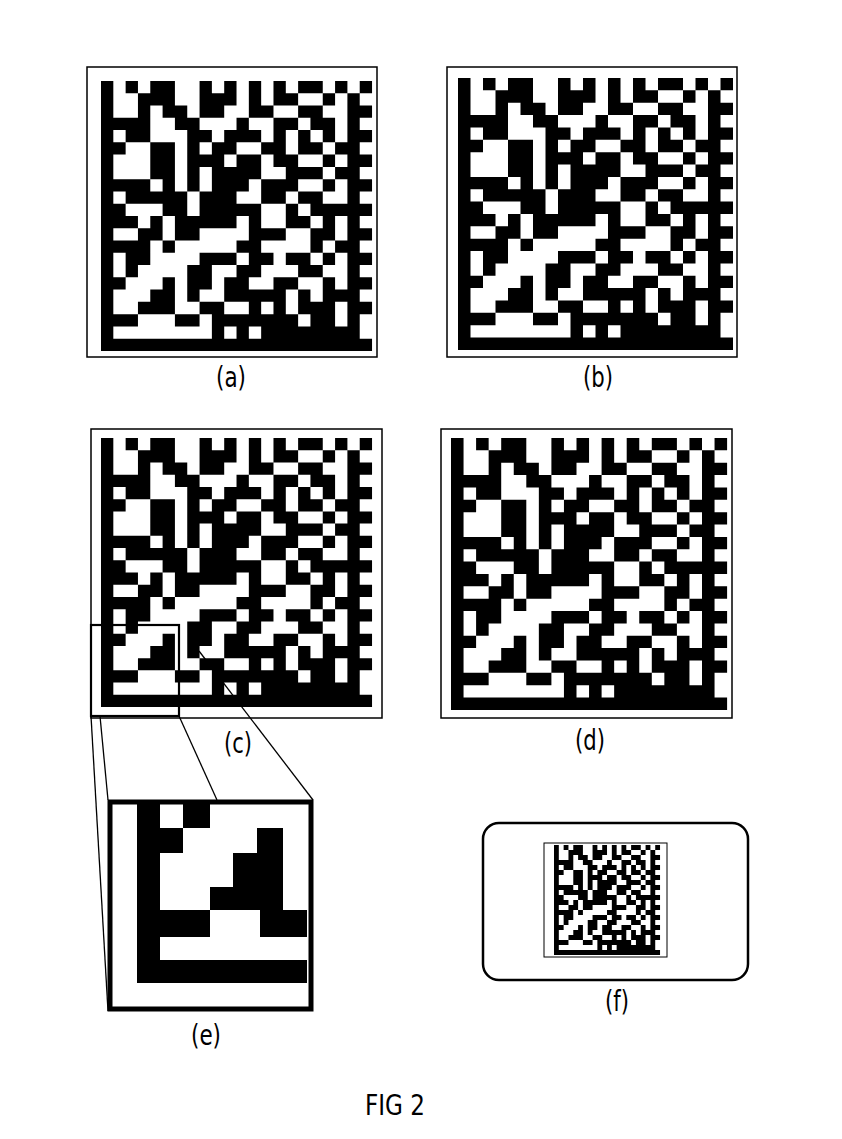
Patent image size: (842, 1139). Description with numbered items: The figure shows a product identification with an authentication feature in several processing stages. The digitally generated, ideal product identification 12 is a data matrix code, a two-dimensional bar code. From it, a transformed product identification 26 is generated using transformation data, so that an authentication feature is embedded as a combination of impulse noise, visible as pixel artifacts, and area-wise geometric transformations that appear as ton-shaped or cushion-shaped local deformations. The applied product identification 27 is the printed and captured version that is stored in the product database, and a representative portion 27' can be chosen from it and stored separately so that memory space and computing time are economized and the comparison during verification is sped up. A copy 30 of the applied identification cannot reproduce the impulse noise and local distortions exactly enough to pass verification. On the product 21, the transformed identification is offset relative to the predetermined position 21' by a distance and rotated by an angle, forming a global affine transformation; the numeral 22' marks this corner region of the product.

The product identification 12 is at (170, 115).
The transformed product identification 26 is at (530, 115).
The applied product identification 27 is at (236, 544).
The representative portion 27' is at (175, 814).
The copy 30 is at (520, 475).
The product 21 is at (579, 901).
The predetermined position 21' is at (554, 868).
The card corner 22' is at (465, 967).